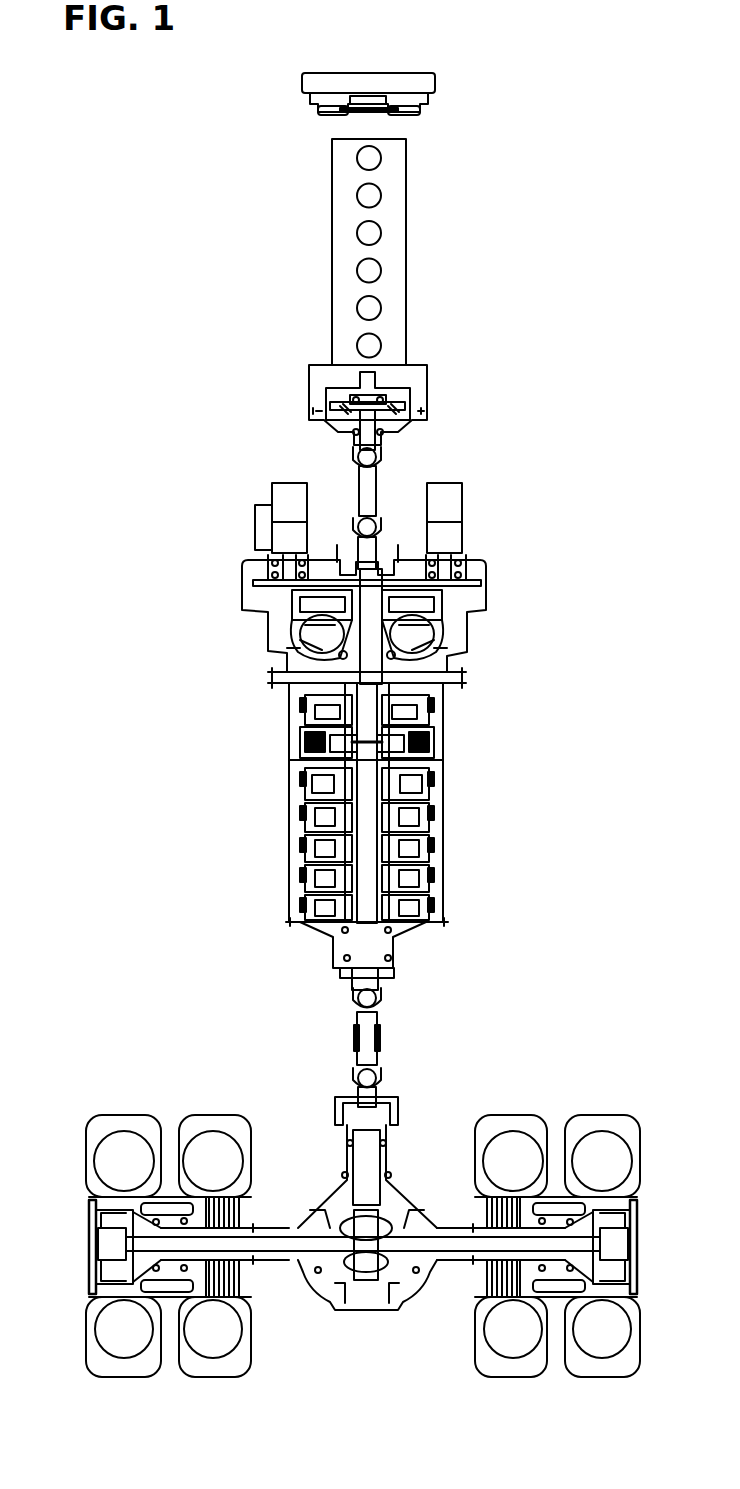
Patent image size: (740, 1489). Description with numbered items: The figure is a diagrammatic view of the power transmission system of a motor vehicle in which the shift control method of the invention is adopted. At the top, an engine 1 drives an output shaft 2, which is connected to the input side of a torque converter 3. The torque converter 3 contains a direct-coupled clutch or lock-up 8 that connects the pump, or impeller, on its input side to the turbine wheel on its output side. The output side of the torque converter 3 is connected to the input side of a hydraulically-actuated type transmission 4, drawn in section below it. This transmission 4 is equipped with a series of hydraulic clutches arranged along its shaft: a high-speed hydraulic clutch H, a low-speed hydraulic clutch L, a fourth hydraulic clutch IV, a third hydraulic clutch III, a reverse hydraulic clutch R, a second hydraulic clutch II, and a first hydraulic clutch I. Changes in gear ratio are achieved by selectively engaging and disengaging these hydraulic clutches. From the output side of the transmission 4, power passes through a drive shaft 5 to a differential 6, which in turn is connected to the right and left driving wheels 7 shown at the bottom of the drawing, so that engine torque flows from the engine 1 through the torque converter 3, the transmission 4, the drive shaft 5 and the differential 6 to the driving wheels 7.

The engine 1 is at (400, 258).
The output shaft 2 is at (378, 440).
The torque converter 3 is at (456, 637).
The hydraulically-actuated type transmission 4 is at (283, 832).
The drive shaft 5 is at (380, 1030).
The differential 6 is at (388, 1204).
The driving wheels 7 is at (200, 1128).
The direct-coupled clutch or lock-up 8 is at (440, 595).
The high-speed hydraulic clutch H is at (425, 705).
The low-speed hydraulic clutch L is at (435, 740).
The fourth hydraulic clutch IV is at (430, 787).
The third hydraulic clutch III is at (435, 818).
The reverse hydraulic clutch R is at (430, 847).
The second hydraulic clutch II is at (430, 872).
The first hydraulic clutch I is at (425, 905).